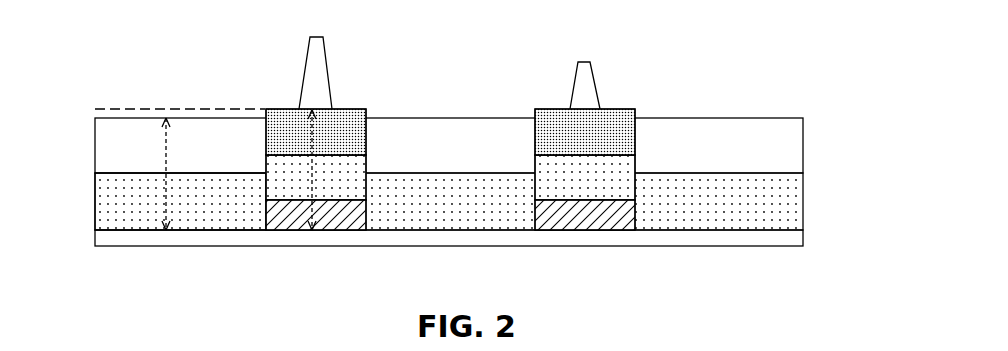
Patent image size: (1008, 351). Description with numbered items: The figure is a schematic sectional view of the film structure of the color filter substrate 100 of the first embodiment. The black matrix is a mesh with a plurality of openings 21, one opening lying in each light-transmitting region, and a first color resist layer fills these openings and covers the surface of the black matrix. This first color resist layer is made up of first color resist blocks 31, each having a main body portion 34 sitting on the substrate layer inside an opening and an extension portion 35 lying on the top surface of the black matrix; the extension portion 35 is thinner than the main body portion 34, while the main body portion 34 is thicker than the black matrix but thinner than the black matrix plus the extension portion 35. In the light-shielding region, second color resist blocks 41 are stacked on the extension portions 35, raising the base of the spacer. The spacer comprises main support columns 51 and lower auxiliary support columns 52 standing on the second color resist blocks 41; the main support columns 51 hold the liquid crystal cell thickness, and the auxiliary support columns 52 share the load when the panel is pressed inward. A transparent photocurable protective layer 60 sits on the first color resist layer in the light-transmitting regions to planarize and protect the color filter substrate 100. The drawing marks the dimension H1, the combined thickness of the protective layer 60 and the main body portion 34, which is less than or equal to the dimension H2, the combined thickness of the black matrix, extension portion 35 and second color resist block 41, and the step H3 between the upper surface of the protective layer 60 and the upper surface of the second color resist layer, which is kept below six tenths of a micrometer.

The color filter substrate 100 is at (752, 42).
The openings 21 is at (450, 217).
The first color resist blocks 31 is at (785, 208).
The main body portion 34 is at (188, 218).
The extension portion 35 is at (350, 160).
The second color resist blocks 41 is at (618, 112).
The main support columns 51 is at (315, 68).
The auxiliary support columns 52 is at (583, 83).
The protective layer 60 is at (803, 143).
The sum of thicknesses of protective layer and main body portion H1 is at (166, 182).
The sum of thicknesses of black matrix, extension portion and second color resist bl H2 is at (312, 147).
The vertical distance between upper surfaces of protective layer and second color re H3 is at (112, 112).